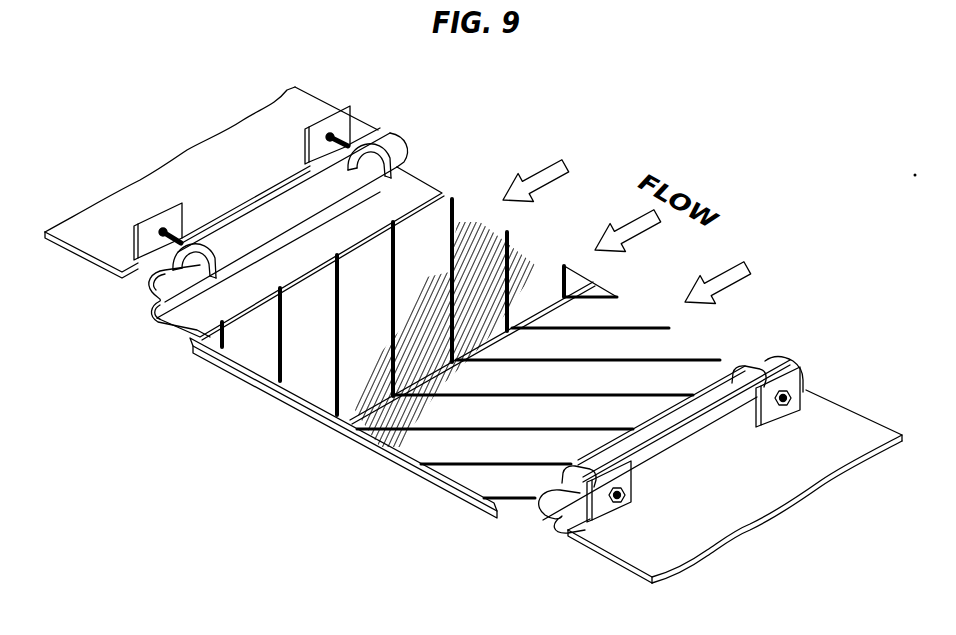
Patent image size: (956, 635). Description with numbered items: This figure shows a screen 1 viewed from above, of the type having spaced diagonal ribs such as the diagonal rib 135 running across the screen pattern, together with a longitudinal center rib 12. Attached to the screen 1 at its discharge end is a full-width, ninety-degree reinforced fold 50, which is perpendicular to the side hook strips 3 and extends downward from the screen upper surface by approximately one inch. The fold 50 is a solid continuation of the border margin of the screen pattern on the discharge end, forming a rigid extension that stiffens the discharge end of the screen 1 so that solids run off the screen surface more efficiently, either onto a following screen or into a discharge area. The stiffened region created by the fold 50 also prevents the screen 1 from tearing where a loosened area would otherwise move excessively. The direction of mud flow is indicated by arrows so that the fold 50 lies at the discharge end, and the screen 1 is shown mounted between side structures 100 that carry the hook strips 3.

The mounting bracket plate 100 is at (153, 186).
The spaced diagonal rib 135 is at (462, 213).
The center rib 12 is at (545, 300).
The screen 1 is at (655, 292).
The side hook strips 3 is at (157, 303).
The reinforced fold 50 is at (392, 458).